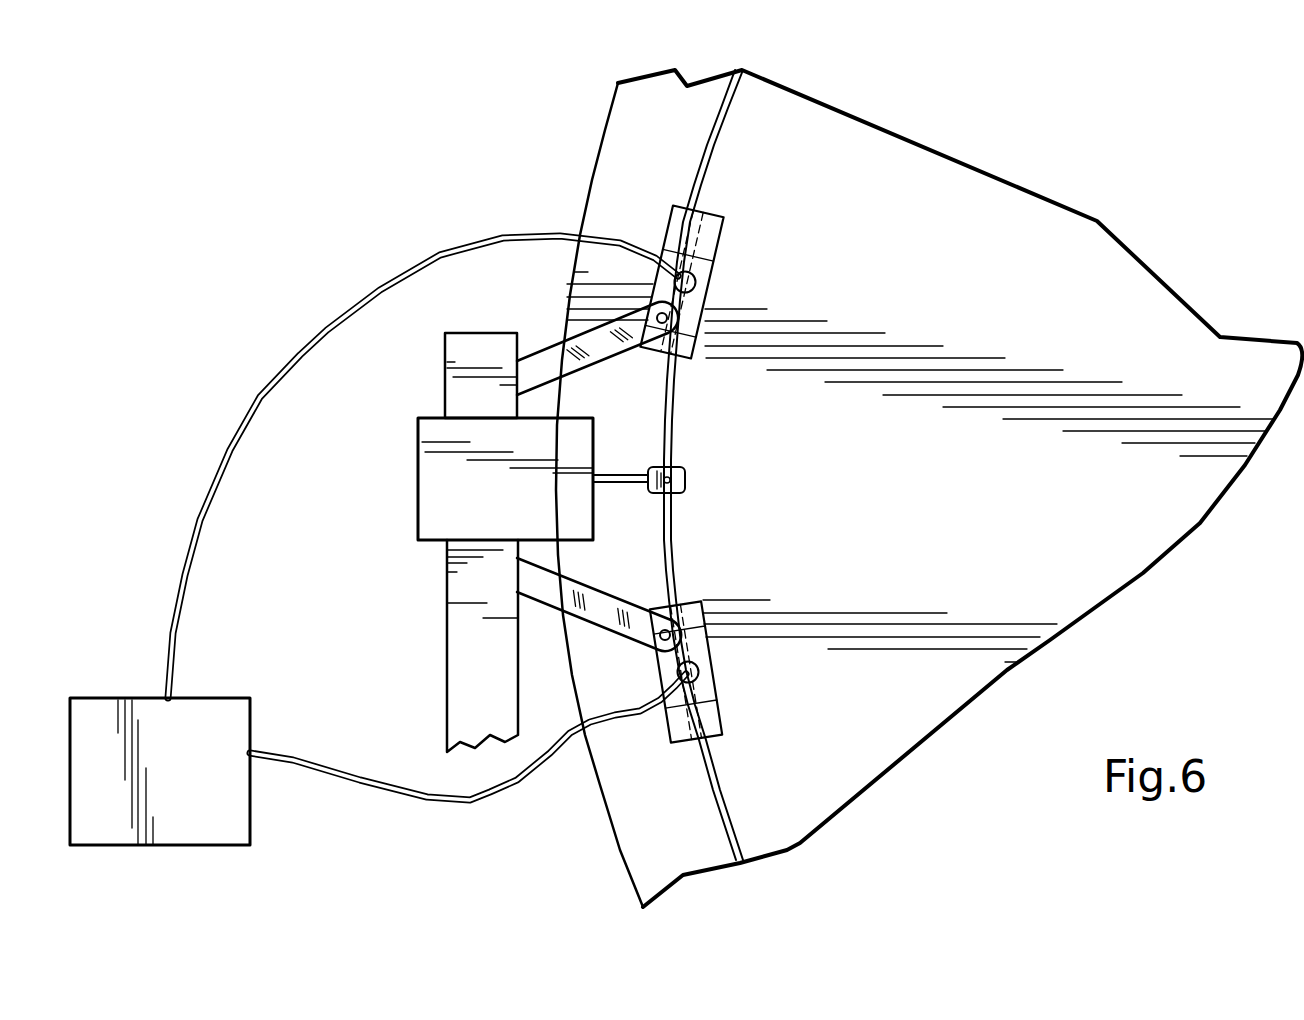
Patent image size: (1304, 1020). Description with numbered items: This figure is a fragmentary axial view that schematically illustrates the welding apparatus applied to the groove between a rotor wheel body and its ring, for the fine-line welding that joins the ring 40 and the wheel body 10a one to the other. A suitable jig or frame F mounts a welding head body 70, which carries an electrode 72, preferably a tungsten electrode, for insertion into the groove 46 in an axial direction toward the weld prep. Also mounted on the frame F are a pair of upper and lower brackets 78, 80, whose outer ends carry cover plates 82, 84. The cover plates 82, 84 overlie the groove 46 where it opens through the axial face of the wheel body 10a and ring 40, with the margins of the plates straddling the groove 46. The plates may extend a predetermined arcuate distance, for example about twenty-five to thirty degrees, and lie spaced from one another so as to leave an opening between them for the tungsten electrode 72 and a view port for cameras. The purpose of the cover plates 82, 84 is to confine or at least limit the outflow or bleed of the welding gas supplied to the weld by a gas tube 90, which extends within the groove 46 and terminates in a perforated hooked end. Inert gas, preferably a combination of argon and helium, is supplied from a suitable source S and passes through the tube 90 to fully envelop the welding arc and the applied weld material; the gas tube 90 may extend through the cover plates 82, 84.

The wheel body 10a is at (846, 497).
The ring 40 is at (618, 193).
The groove 46 is at (712, 144).
The welding head body 70 is at (418, 473).
The electrode 72 is at (672, 495).
The upper bracket 78 is at (533, 367).
The lower bracket 80 is at (542, 600).
The cover plate 82 is at (716, 262).
The cover plate 84 is at (719, 712).
The inert gas supply tube 90 is at (292, 360).
The jig or frame F is at (447, 630).
The source S is at (223, 790).